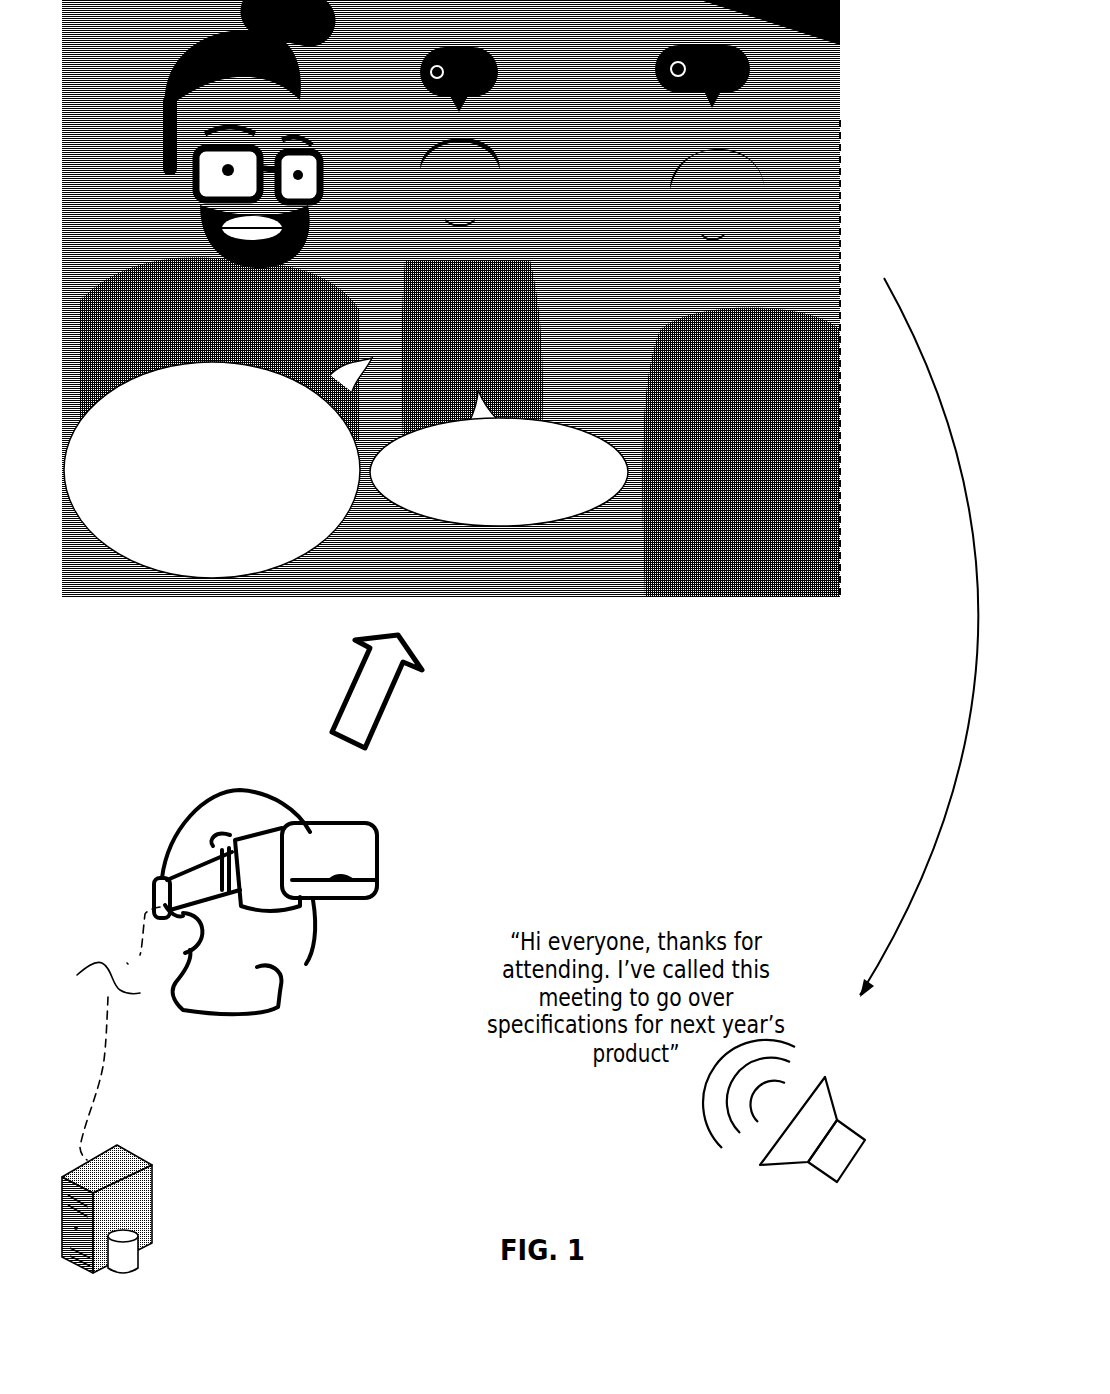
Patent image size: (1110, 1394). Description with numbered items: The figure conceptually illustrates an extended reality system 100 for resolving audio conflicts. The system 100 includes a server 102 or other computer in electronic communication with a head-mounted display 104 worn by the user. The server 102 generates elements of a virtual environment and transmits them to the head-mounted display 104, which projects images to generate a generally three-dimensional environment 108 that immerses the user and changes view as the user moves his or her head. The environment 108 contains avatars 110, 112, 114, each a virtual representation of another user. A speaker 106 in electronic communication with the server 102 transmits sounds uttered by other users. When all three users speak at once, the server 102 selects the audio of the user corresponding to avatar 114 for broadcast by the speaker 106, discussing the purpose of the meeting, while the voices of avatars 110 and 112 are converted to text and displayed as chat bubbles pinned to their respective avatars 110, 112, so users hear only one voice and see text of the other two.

The extended reality system 100 is at (355, 1062).
The server 102 is at (153, 1192).
The head-mounted display 104 is at (200, 870).
The speaker 106 is at (850, 1128).
The three-dimensional environment 108 is at (483, 298).
The avatar 110 is at (300, 112).
The avatar 112 is at (503, 130).
The avatar 114 is at (730, 132).